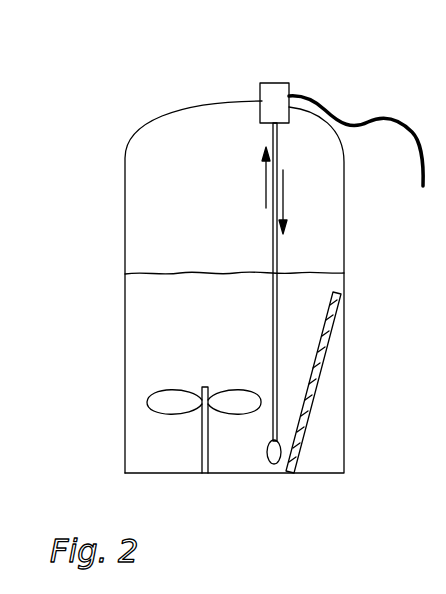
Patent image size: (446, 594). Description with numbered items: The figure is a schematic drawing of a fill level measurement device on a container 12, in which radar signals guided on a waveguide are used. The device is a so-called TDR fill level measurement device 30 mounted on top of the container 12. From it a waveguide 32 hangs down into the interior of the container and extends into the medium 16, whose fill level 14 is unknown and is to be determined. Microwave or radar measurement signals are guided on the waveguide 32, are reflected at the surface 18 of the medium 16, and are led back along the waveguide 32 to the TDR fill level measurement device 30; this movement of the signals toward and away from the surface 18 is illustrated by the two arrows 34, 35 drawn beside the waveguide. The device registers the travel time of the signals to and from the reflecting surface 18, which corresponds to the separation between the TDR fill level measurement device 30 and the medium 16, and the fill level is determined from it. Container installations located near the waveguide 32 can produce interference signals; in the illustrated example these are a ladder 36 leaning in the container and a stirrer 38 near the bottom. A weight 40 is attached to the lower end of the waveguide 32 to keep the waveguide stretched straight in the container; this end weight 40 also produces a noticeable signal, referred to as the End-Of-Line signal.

The tank 12 is at (163, 113).
The liquid surface 14 is at (154, 273).
The medium 16 is at (222, 368).
The surface 18 is at (216, 278).
The TDR fill level measurement device 30 is at (274, 83).
The waveguide 32 is at (278, 256).
The arrow 34 is at (287, 201).
The arrow 35 is at (265, 188).
The ladder 36 is at (325, 352).
The stirrer 38 is at (201, 444).
The weight 40 is at (275, 466).